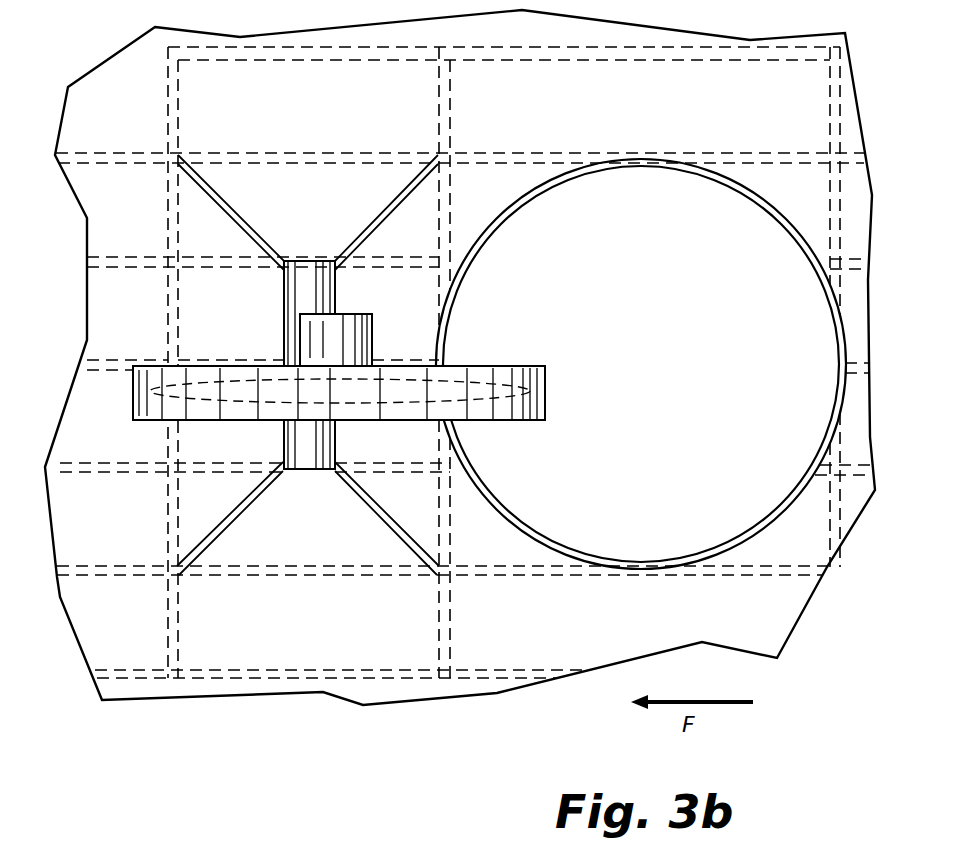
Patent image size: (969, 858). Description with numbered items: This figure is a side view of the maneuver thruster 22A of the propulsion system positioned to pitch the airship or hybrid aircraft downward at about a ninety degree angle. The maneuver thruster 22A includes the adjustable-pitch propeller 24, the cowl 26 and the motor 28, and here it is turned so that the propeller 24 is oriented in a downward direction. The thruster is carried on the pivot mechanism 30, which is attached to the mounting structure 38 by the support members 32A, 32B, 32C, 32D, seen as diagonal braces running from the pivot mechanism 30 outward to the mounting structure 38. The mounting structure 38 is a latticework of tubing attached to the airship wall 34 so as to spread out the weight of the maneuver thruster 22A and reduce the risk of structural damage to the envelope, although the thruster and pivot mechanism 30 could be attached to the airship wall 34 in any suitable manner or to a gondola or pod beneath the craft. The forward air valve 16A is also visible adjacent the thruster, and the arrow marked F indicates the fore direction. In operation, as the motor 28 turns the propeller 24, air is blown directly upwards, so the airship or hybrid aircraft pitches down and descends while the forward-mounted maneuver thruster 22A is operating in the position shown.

The forward air valve 16A is at (617, 582).
The maneuver thruster 22A is at (118, 302).
The propeller 24 is at (211, 399).
The cowl 26 is at (126, 416).
The motor 28 is at (316, 342).
The pivot mechanism 30 is at (318, 295).
The support member 32A is at (227, 203).
The support member 32B is at (380, 222).
The support member 32C is at (203, 538).
The support member 32D is at (417, 550).
The airship wall 34 is at (584, 124).
The mounting structure 38 is at (838, 75).